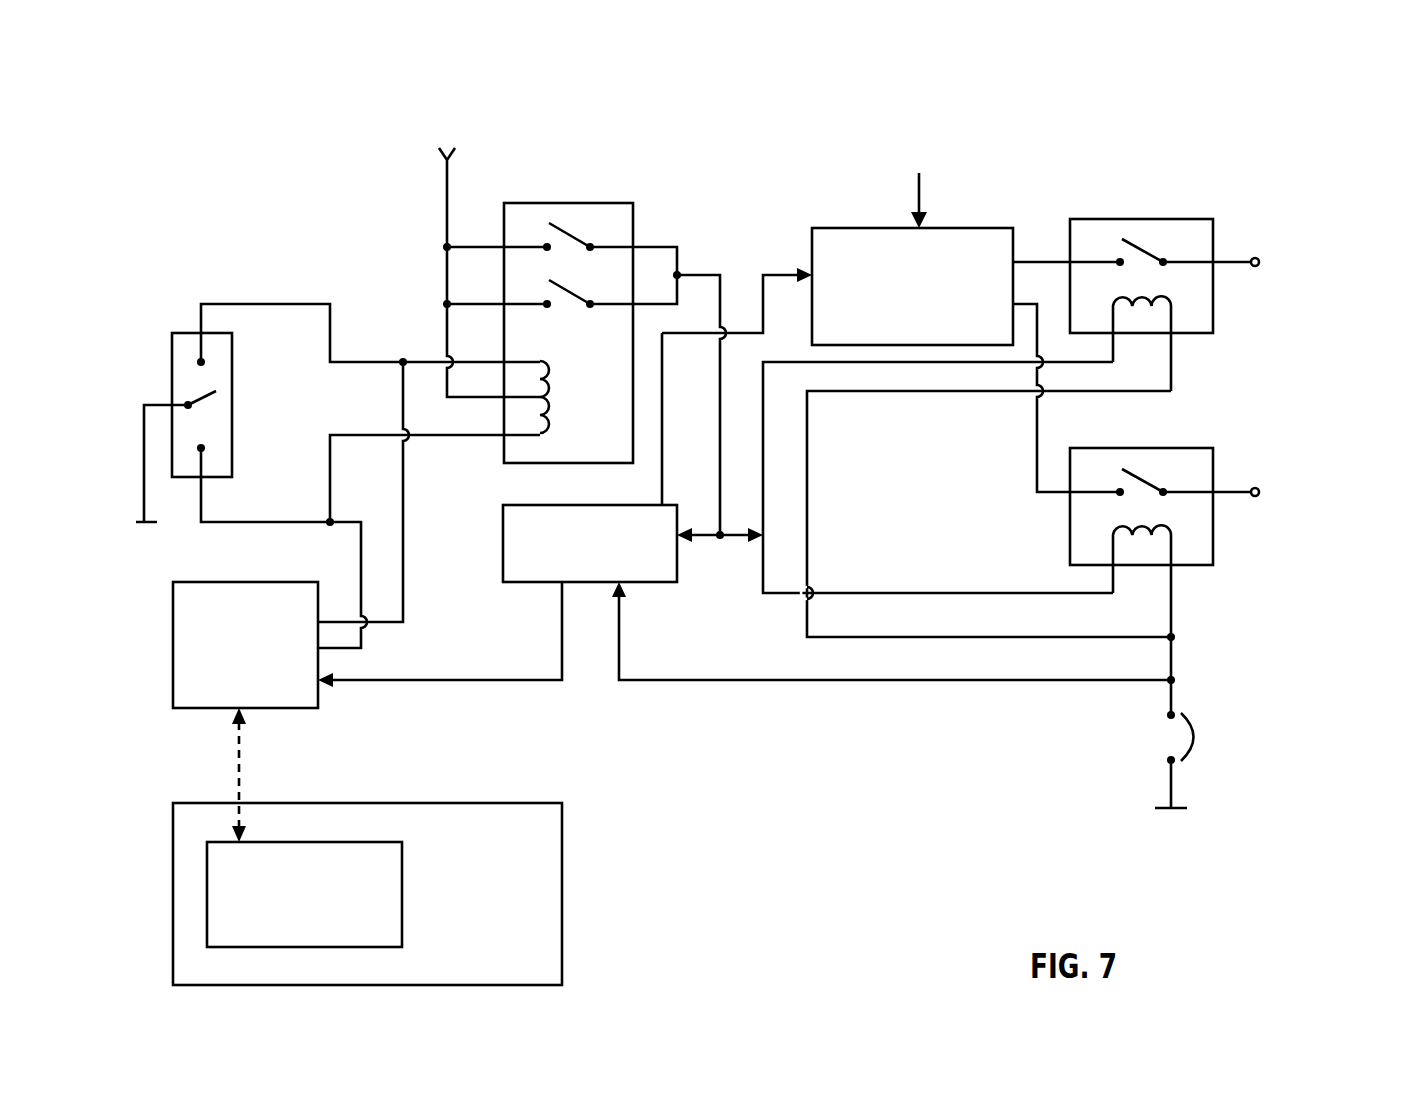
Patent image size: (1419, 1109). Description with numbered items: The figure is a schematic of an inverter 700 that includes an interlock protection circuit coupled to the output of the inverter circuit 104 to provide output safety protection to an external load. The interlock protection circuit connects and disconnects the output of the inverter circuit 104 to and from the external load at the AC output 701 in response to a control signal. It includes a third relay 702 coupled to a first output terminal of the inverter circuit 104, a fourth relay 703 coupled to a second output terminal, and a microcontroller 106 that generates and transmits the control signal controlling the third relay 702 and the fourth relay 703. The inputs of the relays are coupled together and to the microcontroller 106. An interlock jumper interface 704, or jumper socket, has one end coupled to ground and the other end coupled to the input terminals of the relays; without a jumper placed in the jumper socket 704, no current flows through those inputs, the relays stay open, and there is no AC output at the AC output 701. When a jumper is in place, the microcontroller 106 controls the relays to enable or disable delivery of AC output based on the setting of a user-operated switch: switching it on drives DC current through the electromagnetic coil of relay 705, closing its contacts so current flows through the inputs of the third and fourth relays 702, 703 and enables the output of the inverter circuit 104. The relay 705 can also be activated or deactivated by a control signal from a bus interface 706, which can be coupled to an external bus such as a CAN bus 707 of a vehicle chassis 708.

The inverter 700 is at (752, 524).
The inverter circuit 104 is at (898, 335).
The microcontroller 106 is at (645, 587).
The AC output 701 is at (1317, 439).
The third relay 702 is at (1118, 217).
The fourth relay 703 is at (1137, 445).
The interlock jumper interface 704 is at (1309, 780).
The relay 705 is at (557, 197).
The bus interface 706 is at (273, 715).
The CAN bus 707 is at (286, 919).
The vehicle chassis 708 is at (472, 935).